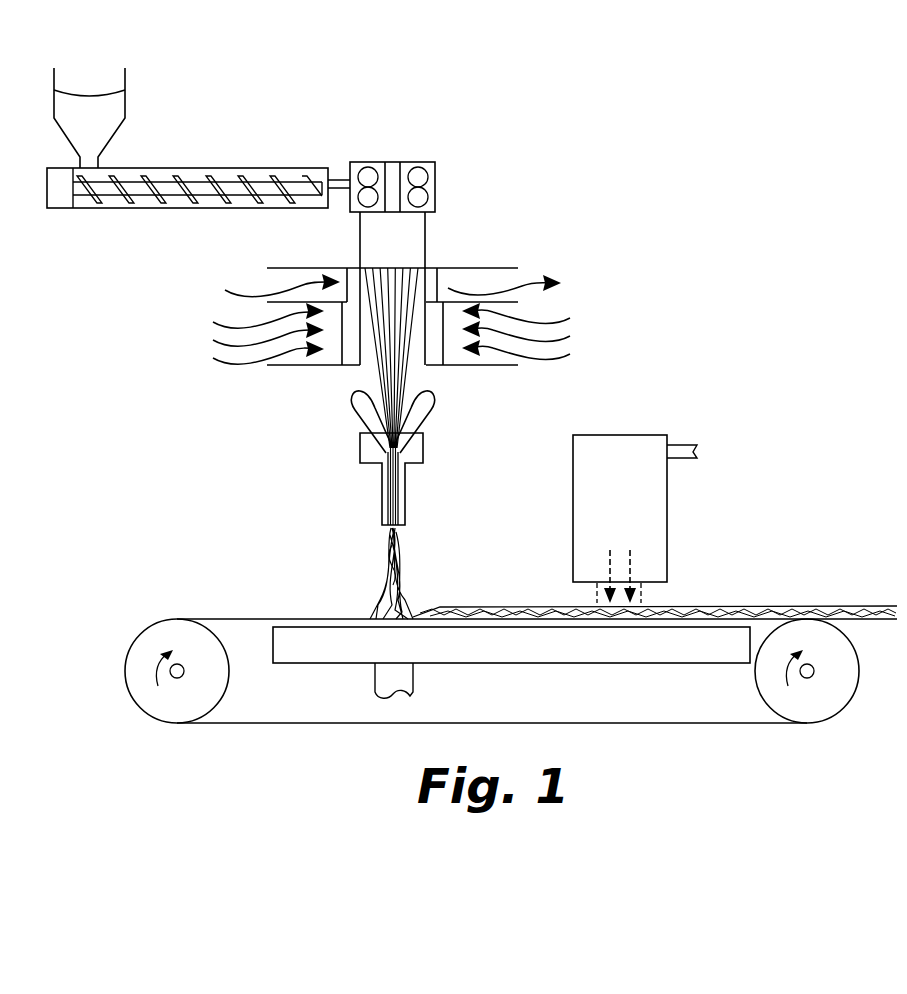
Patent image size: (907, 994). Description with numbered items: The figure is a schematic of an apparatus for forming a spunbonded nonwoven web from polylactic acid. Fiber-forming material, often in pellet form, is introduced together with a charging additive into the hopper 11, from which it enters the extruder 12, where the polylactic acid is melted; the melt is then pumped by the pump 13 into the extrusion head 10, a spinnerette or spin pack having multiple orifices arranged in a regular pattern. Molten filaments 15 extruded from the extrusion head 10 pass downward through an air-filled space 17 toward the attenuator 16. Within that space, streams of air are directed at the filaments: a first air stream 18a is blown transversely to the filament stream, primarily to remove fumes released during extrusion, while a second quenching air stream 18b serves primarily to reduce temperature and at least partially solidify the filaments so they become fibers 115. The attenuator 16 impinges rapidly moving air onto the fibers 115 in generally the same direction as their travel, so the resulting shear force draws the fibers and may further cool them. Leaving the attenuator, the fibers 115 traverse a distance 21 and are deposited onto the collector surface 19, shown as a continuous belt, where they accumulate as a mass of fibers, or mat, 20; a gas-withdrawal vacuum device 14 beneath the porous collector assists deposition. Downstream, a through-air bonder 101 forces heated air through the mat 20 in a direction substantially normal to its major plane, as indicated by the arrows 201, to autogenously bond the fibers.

The extrusion head 10 is at (417, 243).
The hopper 11 is at (114, 112).
The extruder 12 is at (191, 168).
The pump 13 is at (407, 162).
The gas-withdrawal (vacuum) device 14 is at (482, 657).
The molten filaments 15 is at (380, 340).
The attenuator 16 is at (459, 387).
The air-filled space 17 is at (193, 272).
The first air stream 18a is at (527, 282).
The second quenching air stream 18b is at (558, 320).
The collector surface 19 is at (246, 619).
The mass of fibers (mat) 20 is at (843, 605).
The distance between attenuator exit and collector 21 is at (361, 530).
The through-air bonder 101 is at (618, 441).
The fibers 115 is at (407, 580).
The arrows showing direction of heated airflow 201 is at (632, 561).